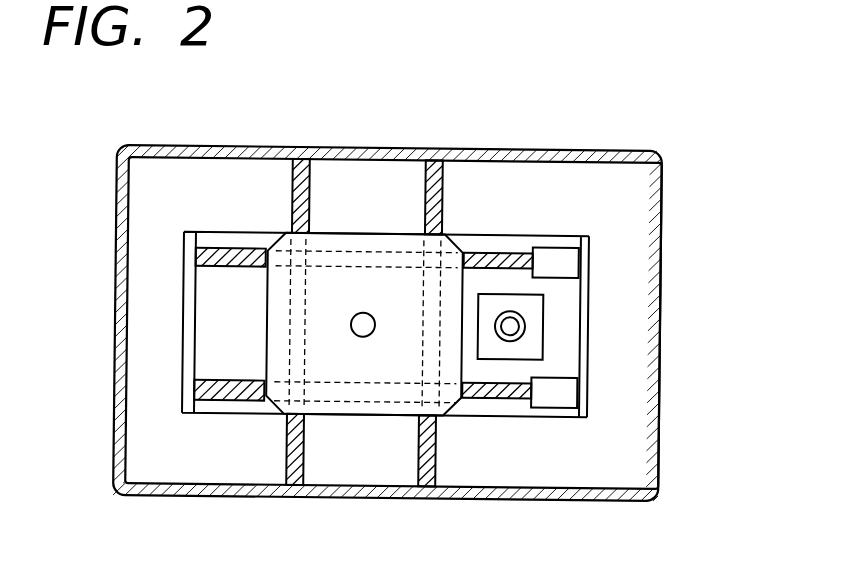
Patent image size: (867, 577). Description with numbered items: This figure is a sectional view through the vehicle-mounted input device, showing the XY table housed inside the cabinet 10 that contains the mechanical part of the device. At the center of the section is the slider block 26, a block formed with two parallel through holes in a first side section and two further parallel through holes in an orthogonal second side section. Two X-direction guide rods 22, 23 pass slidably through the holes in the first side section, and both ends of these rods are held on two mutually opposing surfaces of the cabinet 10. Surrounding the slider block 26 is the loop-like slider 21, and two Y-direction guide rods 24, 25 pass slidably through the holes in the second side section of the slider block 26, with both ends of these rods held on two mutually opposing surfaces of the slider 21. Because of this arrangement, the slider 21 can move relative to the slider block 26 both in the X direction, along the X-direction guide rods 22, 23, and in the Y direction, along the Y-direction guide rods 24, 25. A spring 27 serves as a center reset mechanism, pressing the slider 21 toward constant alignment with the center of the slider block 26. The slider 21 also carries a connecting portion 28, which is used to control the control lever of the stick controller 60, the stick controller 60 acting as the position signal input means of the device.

The cabinet 10 is at (662, 224).
The slider 21 is at (183, 298).
The X-direction guide rod 22 is at (283, 458).
The X-direction guide rod 23 is at (438, 455).
The Y-direction guide rod 24 is at (217, 248).
The Y-direction guide rod 25 is at (228, 392).
The slider block 26 is at (395, 282).
The spring 27 is at (513, 257).
The connecting portion 28 is at (523, 315).
The stick controller 60 is at (543, 345).